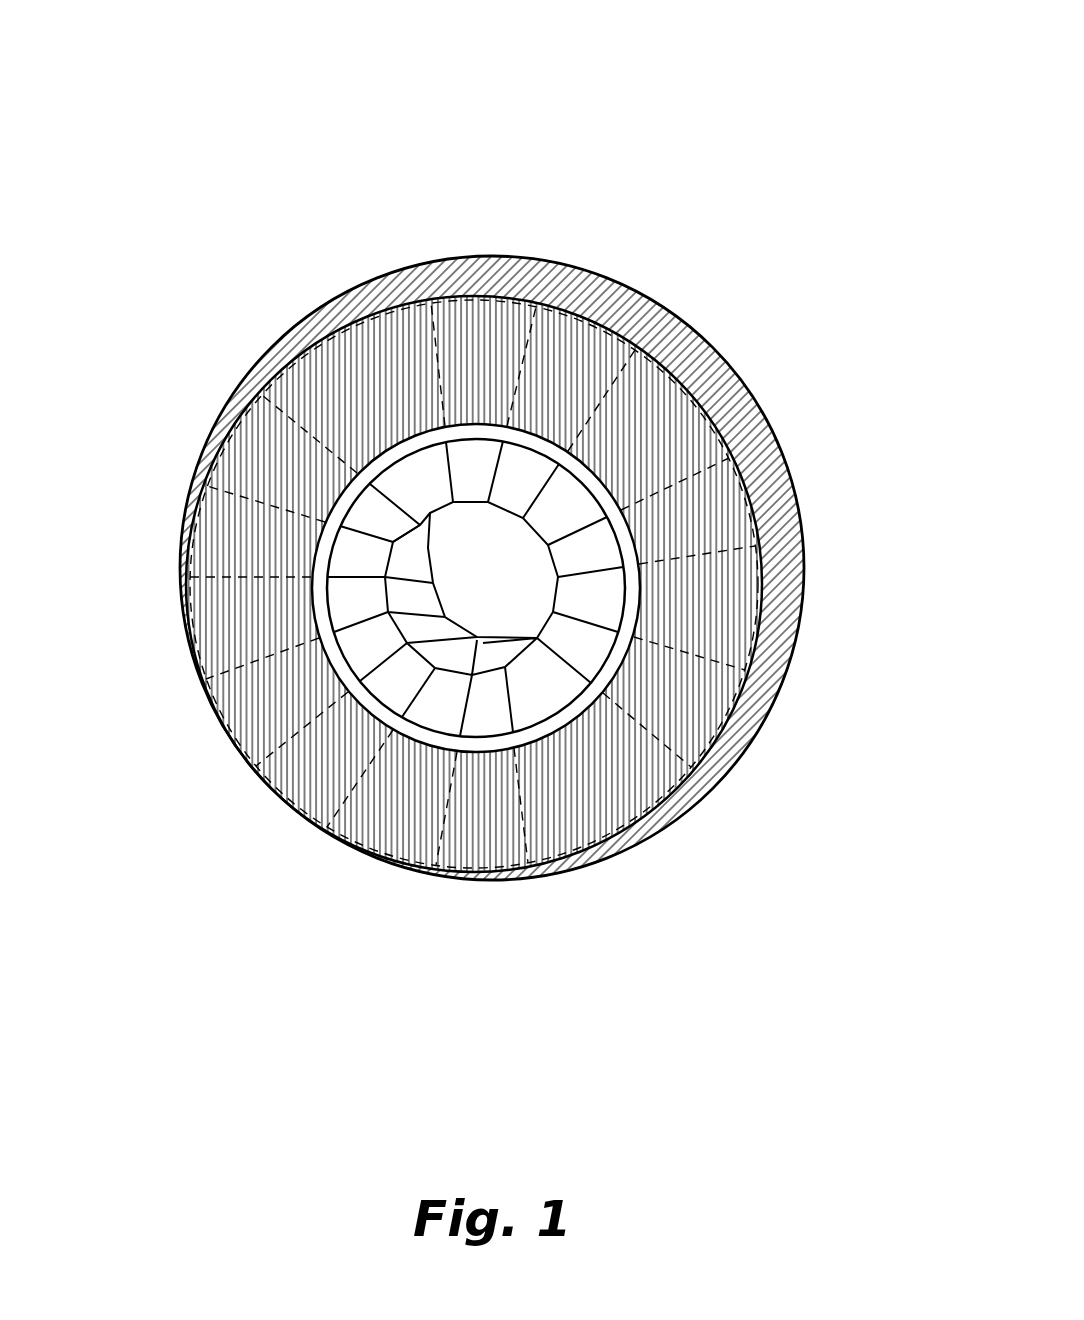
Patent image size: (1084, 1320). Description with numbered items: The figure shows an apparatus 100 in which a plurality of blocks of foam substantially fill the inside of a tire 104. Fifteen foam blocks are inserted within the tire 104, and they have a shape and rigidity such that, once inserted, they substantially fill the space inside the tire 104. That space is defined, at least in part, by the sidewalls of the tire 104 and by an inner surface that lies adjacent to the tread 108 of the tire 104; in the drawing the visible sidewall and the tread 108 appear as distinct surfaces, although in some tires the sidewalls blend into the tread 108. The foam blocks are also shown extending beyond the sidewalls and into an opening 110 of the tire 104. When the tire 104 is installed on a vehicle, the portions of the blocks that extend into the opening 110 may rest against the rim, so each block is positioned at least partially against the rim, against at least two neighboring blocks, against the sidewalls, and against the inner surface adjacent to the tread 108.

The apparatus 100 is at (210, 63).
The tire 104 is at (445, 290).
The tread 108 is at (482, 280).
The opening 110 is at (488, 603).